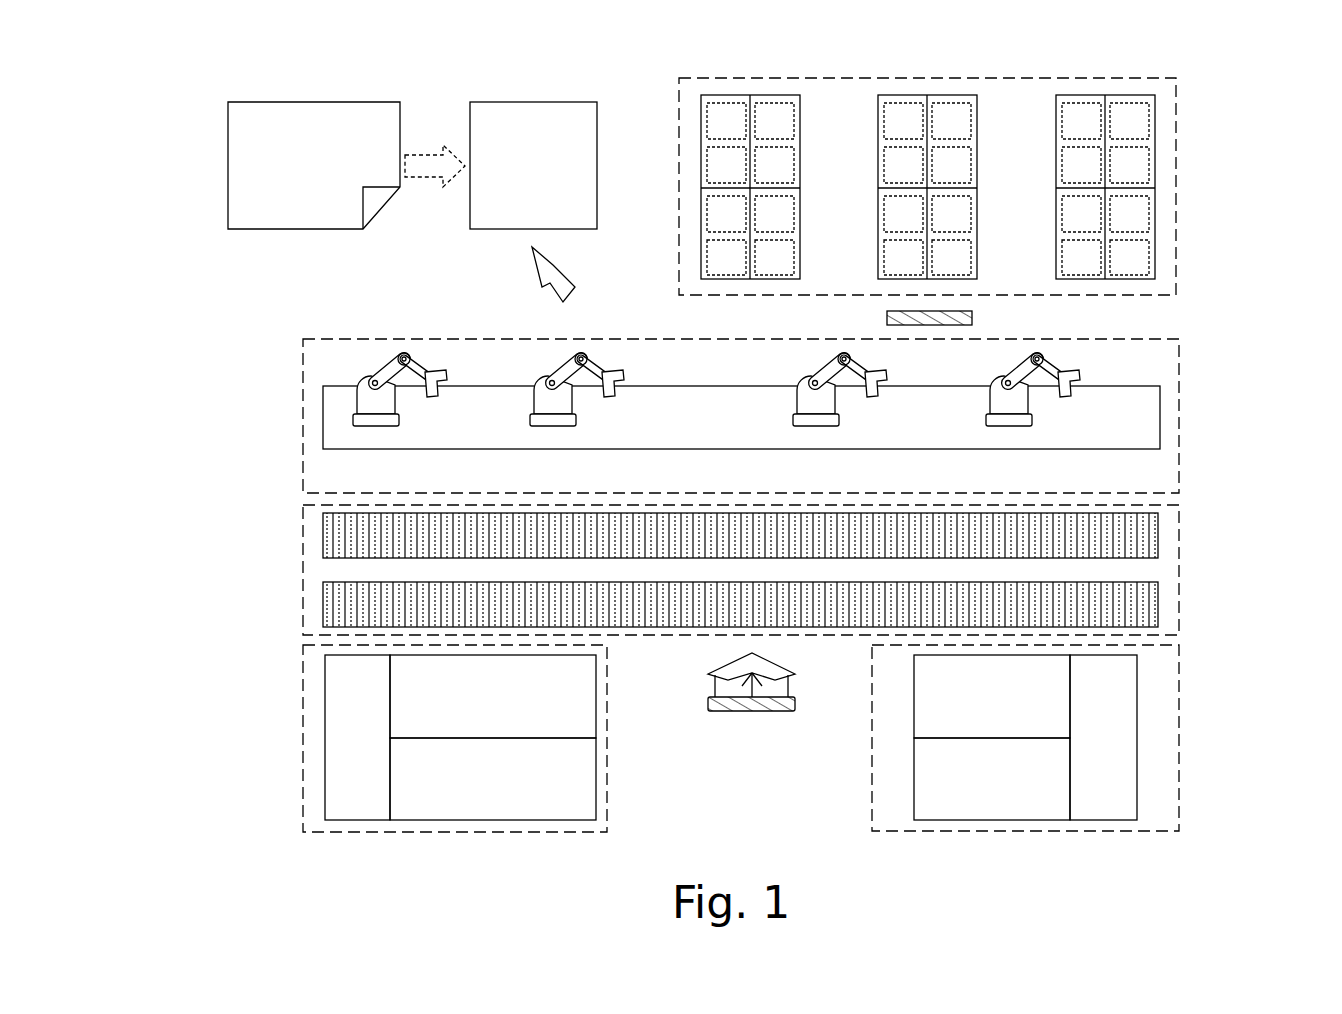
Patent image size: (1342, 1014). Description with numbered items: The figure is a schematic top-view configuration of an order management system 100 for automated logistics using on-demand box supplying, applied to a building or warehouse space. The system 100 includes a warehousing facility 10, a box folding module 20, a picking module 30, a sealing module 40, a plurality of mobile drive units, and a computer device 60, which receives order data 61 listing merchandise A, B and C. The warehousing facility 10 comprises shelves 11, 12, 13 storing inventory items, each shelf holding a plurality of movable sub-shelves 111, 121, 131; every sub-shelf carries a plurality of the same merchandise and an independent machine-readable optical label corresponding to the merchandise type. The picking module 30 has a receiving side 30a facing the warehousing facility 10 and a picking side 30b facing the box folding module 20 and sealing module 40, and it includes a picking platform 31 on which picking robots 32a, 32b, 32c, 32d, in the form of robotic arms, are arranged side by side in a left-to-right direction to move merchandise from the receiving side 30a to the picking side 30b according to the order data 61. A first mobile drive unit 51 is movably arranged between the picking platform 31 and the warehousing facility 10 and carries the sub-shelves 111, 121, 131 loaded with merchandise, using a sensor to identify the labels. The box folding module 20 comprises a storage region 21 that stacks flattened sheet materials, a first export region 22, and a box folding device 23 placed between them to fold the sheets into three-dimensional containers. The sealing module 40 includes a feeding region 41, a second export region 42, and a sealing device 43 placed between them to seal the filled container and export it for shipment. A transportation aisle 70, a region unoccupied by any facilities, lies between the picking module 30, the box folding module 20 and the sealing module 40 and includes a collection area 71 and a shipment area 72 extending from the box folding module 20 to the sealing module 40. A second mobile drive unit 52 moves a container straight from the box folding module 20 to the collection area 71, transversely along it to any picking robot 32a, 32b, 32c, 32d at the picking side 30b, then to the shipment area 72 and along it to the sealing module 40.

The order management system 100 is at (1320, 50).
The warehousing facility 10 is at (950, 153).
The shelf 11 is at (709, 145).
The shelf 12 is at (899, 145).
The shelf 13 is at (1169, 145).
The sub-shelf 111 is at (710, 113).
The sub-shelf 121 is at (890, 214).
The sub-shelf 131 is at (1143, 170).
The computer device 60 is at (537, 102).
The order data 61 is at (383, 102).
The picking module 30 is at (738, 378).
The receiving side 30a is at (313, 357).
The picking side 30b is at (328, 474).
The picking platform 31 is at (336, 421).
The picking robot 32a is at (386, 370).
The picking robot 32b is at (568, 370).
The picking robot 32c is at (825, 372).
The picking robot 32d is at (1045, 368).
The first mobile drive unit 51 is at (975, 318).
The second mobile drive unit 52 is at (754, 712).
The transportation aisle 70 is at (792, 566).
The collection area 71 is at (1158, 605).
The shipment area 72 is at (1158, 545).
The box folding module 20 is at (445, 774).
The storage region 21 is at (357, 812).
The first export region 22 is at (583, 697).
The box folding device 23 is at (583, 780).
The sealing module 40 is at (1046, 773).
The feeding region 41 is at (913, 697).
The second export region 42 is at (1108, 812).
The sealing device 43 is at (913, 777).